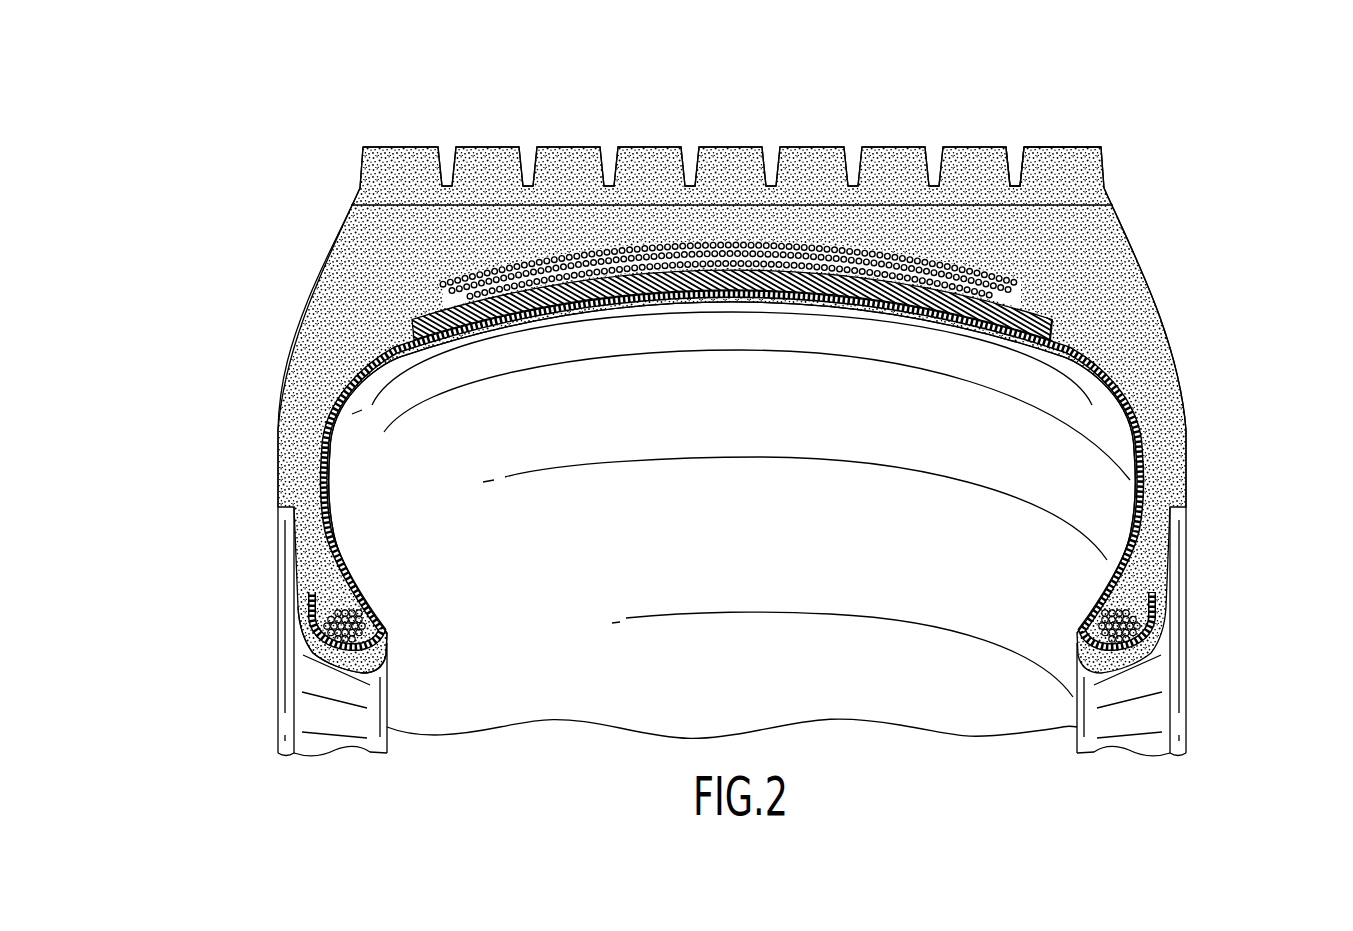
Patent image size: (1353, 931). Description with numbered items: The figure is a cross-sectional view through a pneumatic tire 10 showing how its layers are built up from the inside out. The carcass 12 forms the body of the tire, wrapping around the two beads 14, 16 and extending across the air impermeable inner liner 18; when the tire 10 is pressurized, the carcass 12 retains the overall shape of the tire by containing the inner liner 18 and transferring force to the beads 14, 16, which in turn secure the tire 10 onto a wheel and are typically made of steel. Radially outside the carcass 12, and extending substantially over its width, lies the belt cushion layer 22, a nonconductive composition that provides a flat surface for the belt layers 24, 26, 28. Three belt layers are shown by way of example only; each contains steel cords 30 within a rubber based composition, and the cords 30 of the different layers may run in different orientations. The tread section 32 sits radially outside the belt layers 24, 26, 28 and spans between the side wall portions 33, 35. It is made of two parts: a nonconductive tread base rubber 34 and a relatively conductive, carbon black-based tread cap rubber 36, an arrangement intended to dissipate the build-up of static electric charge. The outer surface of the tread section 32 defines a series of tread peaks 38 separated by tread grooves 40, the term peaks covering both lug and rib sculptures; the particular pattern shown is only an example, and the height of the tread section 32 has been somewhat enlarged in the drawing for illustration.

The pneumatic tire 10 is at (262, 115).
The carcass 12 is at (297, 507).
The bead 14 is at (333, 640).
The bead 16 is at (1157, 607).
The inner liner 18 is at (375, 617).
The belt cushion layer 22 is at (1052, 328).
The belt layer 24 is at (414, 332).
The belt layer 26 is at (440, 296).
The belt layer 28 is at (471, 282).
The steel cords 30 is at (1033, 298).
The tread section 32 is at (315, 213).
The side wall portion 33 is at (270, 409).
The tread base rubber 34 is at (365, 238).
The side wall portion 35 is at (1201, 395).
The tread cap rubber 36 is at (1100, 190).
The tread peaks 38 is at (1103, 163).
The tread grooves 40 is at (1015, 148).